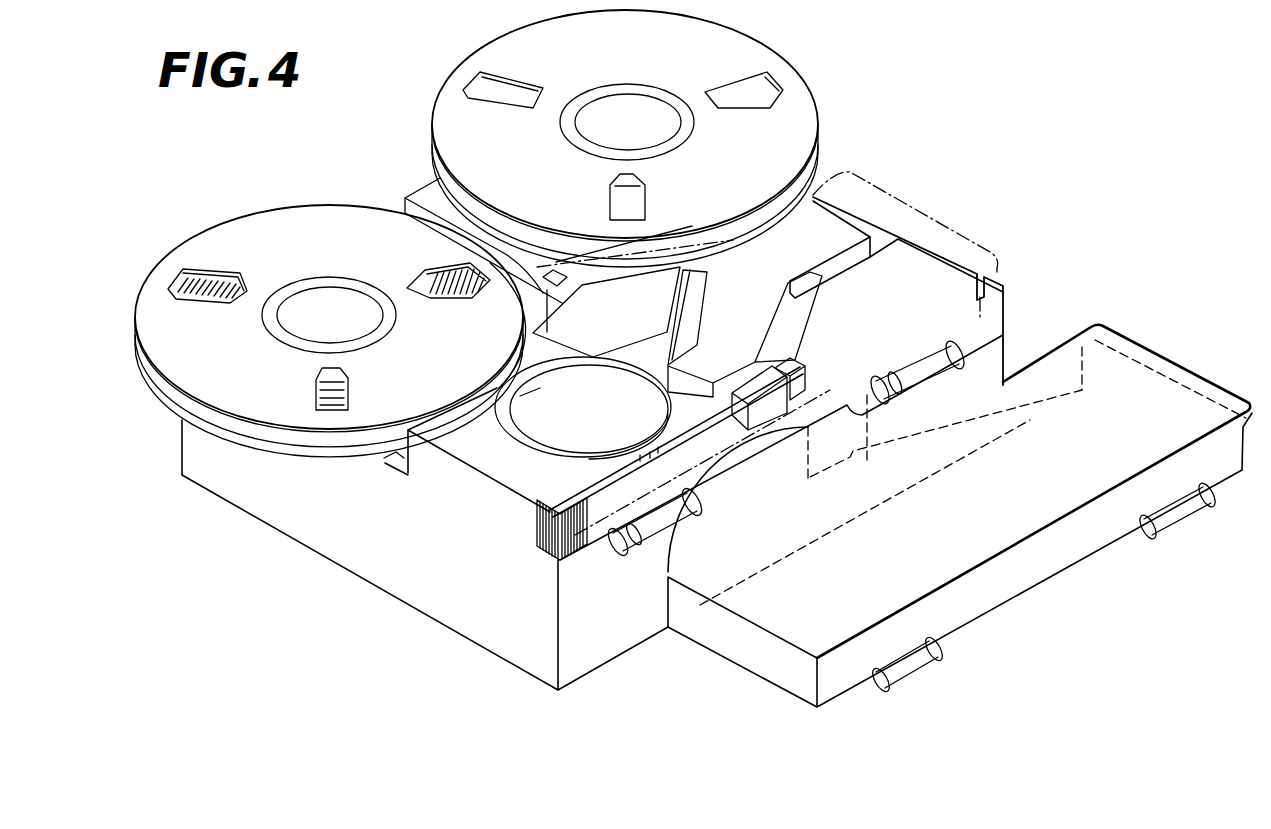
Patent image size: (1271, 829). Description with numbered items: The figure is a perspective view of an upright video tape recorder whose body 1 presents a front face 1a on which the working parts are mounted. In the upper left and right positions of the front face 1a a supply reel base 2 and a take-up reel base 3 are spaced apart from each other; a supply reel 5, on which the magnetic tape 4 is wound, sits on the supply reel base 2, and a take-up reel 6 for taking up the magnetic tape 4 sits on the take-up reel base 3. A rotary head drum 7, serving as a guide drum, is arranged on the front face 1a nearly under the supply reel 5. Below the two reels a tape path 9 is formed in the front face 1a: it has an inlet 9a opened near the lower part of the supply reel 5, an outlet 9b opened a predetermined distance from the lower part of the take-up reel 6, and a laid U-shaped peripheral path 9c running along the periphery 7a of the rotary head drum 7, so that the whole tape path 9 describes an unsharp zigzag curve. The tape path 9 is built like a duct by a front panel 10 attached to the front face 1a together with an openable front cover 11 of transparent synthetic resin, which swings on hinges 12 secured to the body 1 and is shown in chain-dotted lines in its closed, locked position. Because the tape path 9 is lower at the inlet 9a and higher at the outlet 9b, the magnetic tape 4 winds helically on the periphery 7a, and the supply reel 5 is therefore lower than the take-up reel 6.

The body 1 is at (378, 562).
The front face 1a is at (390, 461).
The supply reel base 2 is at (325, 305).
The take-up reel base 3 is at (588, 128).
The magnetic tape 4 is at (205, 277).
The supply reel 5 is at (273, 215).
The take-up reel 6 is at (738, 56).
The rotary head drum 7 is at (557, 440).
The periphery 7a is at (513, 440).
The tape path 9 is at (778, 347).
The inlet 9a is at (567, 303).
The outlet 9b is at (853, 240).
The peripheral path 9c is at (500, 418).
The front panel 10 is at (575, 497).
The front cover 11 is at (980, 247).
The hinges 12 is at (641, 556).